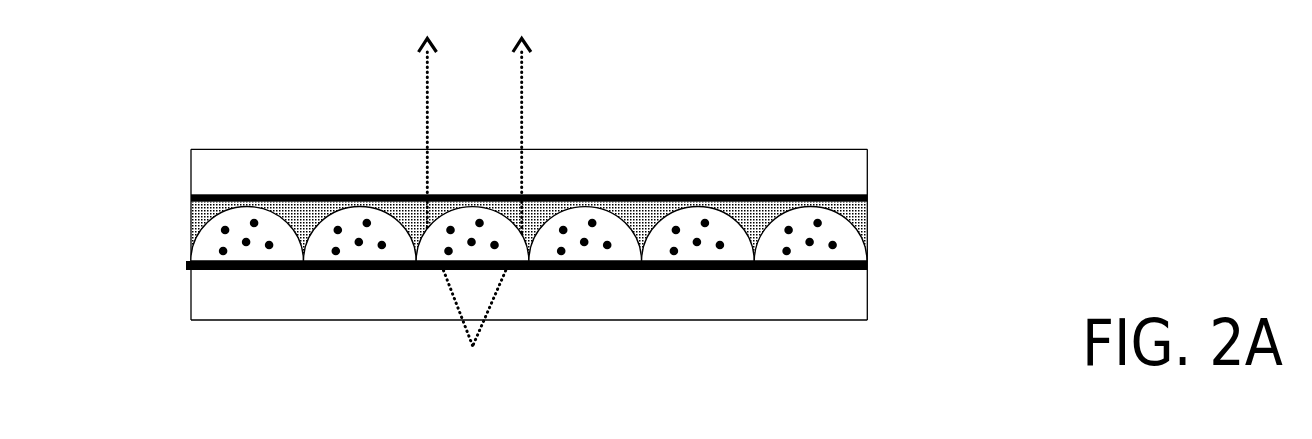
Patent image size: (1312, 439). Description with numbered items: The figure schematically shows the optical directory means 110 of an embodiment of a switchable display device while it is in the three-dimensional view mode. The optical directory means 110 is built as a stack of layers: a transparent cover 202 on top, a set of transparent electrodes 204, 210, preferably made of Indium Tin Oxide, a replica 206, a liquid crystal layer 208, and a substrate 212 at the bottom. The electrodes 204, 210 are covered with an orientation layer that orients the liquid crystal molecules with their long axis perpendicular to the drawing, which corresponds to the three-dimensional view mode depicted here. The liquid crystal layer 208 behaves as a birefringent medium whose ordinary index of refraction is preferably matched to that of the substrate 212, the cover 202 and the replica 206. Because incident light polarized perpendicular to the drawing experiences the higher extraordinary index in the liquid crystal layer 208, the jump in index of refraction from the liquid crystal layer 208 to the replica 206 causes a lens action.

The optical directory means 110 is at (124, 291).
The transparent cover 202 is at (867, 159).
The transparent electrode 204 is at (867, 195).
The replica 206 is at (867, 215).
The liquid crystal layer 208 is at (828, 237).
The transparent electrode 210 is at (867, 269).
The substrate 212 is at (867, 298).